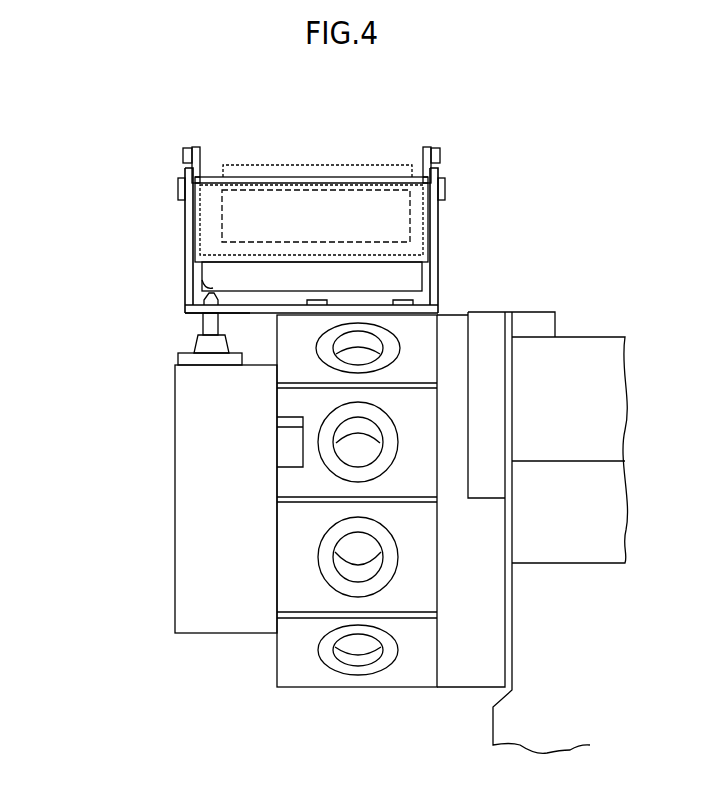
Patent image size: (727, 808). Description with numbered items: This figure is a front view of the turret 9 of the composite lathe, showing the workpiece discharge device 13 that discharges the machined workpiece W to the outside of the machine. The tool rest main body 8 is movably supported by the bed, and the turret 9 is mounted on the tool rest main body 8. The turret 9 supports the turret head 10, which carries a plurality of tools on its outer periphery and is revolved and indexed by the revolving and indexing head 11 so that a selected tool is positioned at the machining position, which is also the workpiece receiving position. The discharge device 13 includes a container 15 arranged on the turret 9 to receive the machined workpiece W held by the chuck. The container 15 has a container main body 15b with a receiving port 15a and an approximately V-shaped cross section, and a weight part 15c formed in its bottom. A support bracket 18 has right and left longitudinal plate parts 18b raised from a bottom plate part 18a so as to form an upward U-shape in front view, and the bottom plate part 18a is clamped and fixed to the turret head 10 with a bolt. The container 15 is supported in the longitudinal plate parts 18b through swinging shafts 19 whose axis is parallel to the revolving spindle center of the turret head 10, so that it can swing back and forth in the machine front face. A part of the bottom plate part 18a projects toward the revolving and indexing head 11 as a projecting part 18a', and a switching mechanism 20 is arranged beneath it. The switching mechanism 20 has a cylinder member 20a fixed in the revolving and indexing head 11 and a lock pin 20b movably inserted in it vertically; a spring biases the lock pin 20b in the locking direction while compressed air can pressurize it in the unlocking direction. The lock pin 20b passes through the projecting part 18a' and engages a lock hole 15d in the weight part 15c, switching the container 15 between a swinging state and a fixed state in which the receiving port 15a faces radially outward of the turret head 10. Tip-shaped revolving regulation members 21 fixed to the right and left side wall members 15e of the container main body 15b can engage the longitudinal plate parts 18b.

The tool rest main body 8 is at (611, 327).
The turret 9 is at (264, 666).
The turret head 10 is at (277, 540).
The revolving and indexing head 11 is at (175, 412).
The workpiece discharge device 13 is at (117, 125).
The container 15 is at (318, 174).
The receiving port 15a is at (282, 175).
The container main body 15b is at (380, 185).
The weight part 15c is at (428, 280).
The lock hole 15d is at (213, 283).
The side wall member 15e is at (203, 172).
The support bracket 18 is at (441, 218).
The bottom plate part 18a is at (358, 302).
The projecting part 18a' is at (158, 298).
The longitudinal plate part 18b is at (185, 228).
The swinging shaft 19 is at (178, 186).
The switching mechanism 20 is at (181, 338).
The cylinder member 20a is at (195, 352).
The lock pin 20b is at (200, 327).
The revolving regulation member 21 is at (190, 148).
The workpiece W is at (362, 163).